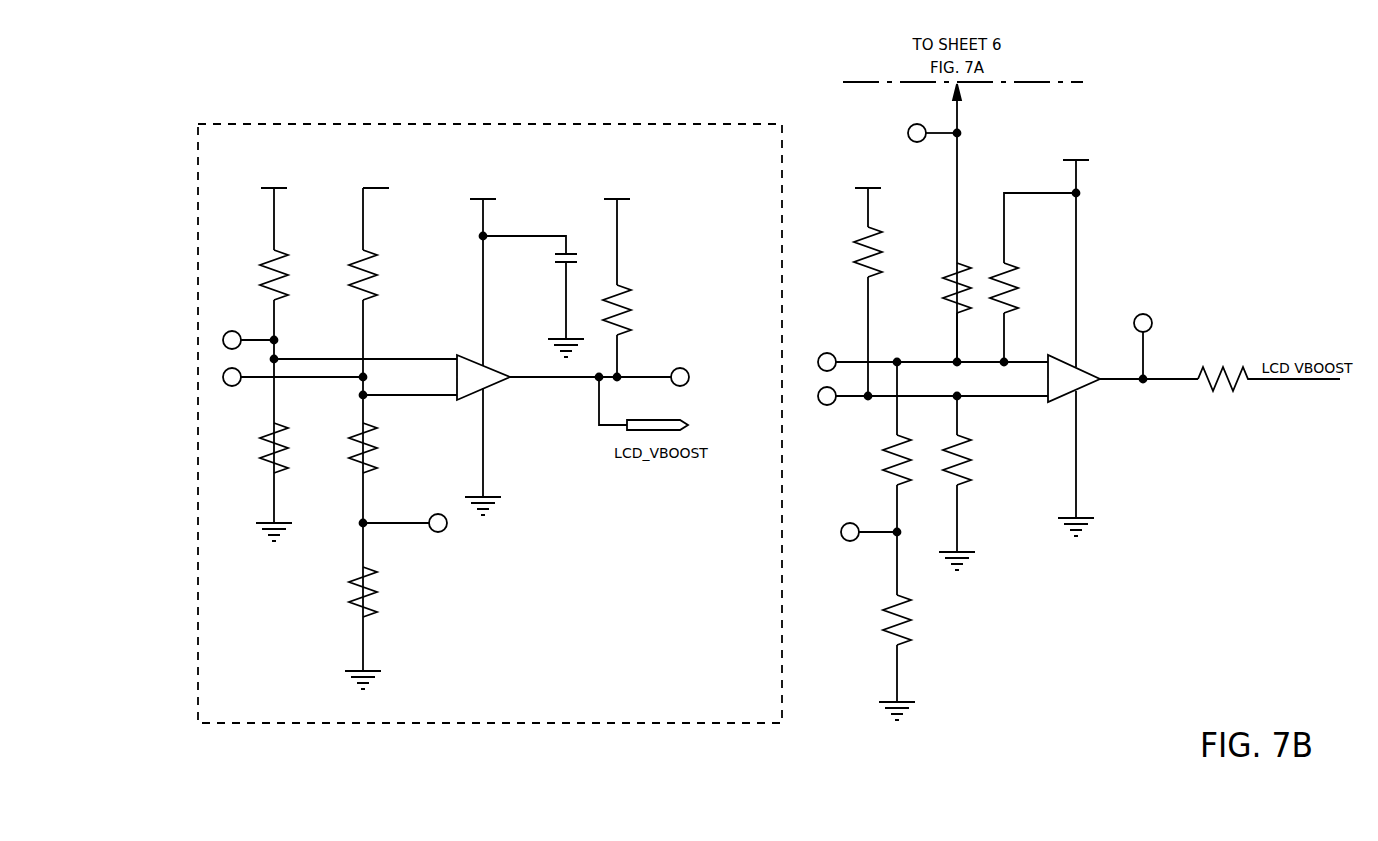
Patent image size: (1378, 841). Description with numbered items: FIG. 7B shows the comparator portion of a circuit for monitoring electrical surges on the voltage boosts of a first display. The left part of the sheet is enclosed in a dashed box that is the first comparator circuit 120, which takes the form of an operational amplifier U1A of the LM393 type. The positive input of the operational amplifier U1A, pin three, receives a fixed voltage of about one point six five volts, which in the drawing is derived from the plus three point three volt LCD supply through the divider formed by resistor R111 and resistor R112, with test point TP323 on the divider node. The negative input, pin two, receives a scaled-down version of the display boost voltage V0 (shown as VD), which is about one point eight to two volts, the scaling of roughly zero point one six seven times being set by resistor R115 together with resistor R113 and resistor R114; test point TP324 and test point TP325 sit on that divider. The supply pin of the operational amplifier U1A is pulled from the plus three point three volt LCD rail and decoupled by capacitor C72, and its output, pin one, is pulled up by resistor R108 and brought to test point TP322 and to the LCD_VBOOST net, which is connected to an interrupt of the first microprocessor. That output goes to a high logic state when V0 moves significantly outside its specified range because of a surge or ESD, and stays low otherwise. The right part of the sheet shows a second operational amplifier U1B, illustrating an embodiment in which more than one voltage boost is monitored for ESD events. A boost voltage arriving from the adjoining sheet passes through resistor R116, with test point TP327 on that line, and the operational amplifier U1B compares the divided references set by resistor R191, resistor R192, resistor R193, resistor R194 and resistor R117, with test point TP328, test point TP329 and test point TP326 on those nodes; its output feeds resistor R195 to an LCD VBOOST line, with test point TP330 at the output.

The first comparator circuit 120 is at (515, 725).
The resistor R111 is at (274, 263).
The resistor R112 is at (275, 450).
The resistor R113 is at (366, 459).
The resistor R114 is at (364, 606).
The resistor R115 is at (369, 281).
The resistor R108 is at (617, 277).
The capacitor C72 is at (534, 296).
The operational amplifier U1A is at (495, 346).
The operational amplifier U1B is at (1084, 364).
The test point TP322 is at (707, 377).
The test point TP323 is at (242, 331).
The test point TP324 is at (286, 390).
The test point TP325 is at (411, 536).
The test point TP326 is at (861, 542).
The test point TP327 is at (907, 133).
The test point TP328 is at (930, 349).
The test point TP329 is at (927, 407).
The test point TP330 is at (1142, 336).
The resistor R116 is at (960, 293).
The resistor R117 is at (958, 483).
The resistor R191 is at (868, 281).
The resistor R192 is at (900, 447).
The resistor R193 is at (898, 626).
The resistor R194 is at (1050, 250).
The resistor R195 is at (1248, 385).